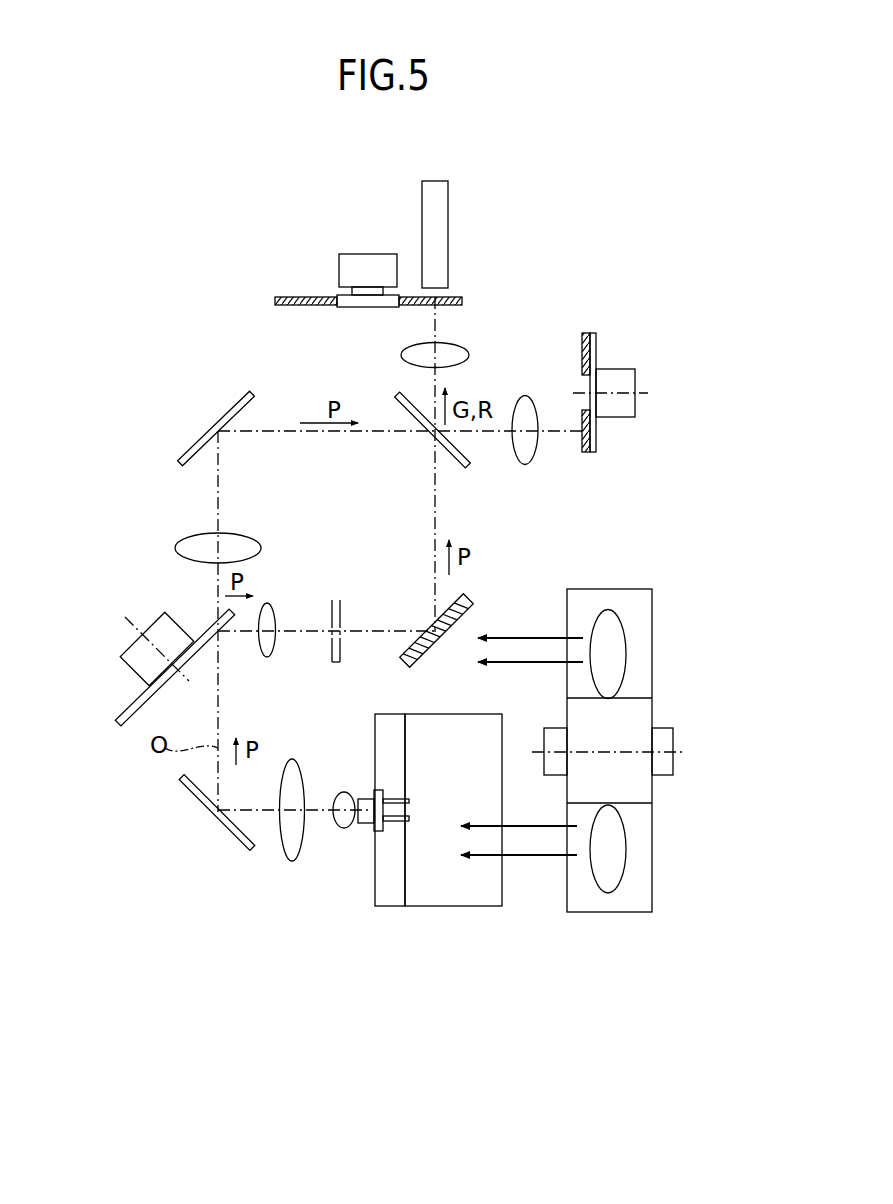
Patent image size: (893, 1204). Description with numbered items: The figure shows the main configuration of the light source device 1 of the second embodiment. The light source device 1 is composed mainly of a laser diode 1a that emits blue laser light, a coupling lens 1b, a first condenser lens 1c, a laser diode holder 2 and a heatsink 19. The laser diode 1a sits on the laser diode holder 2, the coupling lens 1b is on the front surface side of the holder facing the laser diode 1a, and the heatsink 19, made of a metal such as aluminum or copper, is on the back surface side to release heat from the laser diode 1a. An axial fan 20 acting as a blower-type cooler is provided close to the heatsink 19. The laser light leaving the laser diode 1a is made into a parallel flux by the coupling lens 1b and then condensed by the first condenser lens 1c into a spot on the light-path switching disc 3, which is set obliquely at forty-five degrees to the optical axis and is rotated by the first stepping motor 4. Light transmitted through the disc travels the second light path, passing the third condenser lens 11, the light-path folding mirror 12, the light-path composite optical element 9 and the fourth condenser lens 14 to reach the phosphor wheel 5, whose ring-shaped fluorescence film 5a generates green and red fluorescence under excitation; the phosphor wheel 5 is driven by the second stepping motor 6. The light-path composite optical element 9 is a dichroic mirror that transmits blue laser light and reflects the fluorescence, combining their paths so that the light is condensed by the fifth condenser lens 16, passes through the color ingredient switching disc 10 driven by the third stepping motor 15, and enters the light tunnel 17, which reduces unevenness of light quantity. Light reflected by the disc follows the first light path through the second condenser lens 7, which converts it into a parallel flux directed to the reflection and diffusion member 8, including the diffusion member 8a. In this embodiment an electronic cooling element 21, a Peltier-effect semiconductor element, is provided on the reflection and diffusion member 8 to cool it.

The light source device 1 is at (375, 869).
The laser diode 1a is at (370, 818).
The coupling lens 1b is at (344, 828).
The first condenser lens 1c is at (292, 862).
The laser diode holder 2 is at (388, 900).
The light-path switching disc 3 is at (127, 703).
The first stepping motor 4 is at (128, 650).
The phosphor wheel 5 is at (575, 426).
The fluorescence film 5a is at (582, 445).
The second stepping motor 6 is at (636, 385).
The second condenser lens 7 is at (265, 660).
The reflection and diffusion member 8 is at (462, 597).
The diffusion member 8a is at (334, 598).
The light-path composite optical element 9 is at (467, 462).
The color ingredient switching disc 10 is at (318, 297).
The third condenser lens 11 is at (185, 542).
The light-path folding mirror 12 is at (192, 451).
The fourth condenser lens 14 is at (525, 396).
The third stepping motor 15 is at (375, 254).
The fifth condenser lens 16 is at (401, 355).
The light tunnel 17 is at (448, 215).
The heatsink 19 is at (456, 845).
The axial fan 20 is at (652, 840).
The electronic cooling element 21 is at (428, 665).